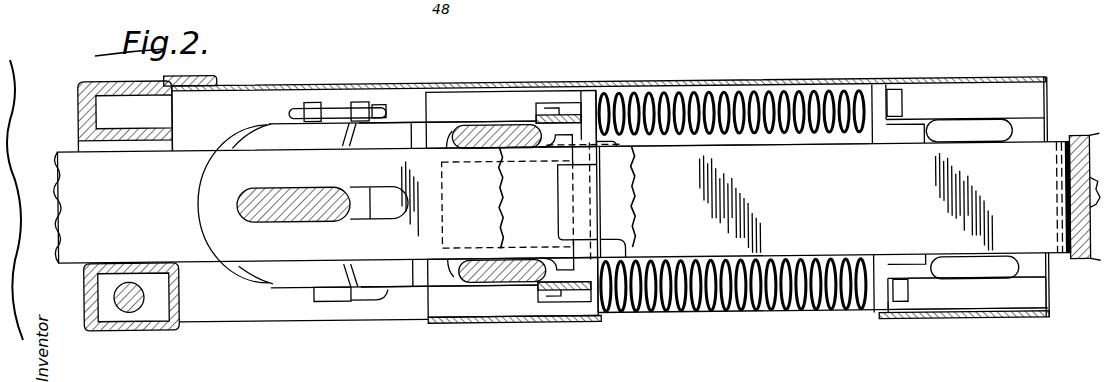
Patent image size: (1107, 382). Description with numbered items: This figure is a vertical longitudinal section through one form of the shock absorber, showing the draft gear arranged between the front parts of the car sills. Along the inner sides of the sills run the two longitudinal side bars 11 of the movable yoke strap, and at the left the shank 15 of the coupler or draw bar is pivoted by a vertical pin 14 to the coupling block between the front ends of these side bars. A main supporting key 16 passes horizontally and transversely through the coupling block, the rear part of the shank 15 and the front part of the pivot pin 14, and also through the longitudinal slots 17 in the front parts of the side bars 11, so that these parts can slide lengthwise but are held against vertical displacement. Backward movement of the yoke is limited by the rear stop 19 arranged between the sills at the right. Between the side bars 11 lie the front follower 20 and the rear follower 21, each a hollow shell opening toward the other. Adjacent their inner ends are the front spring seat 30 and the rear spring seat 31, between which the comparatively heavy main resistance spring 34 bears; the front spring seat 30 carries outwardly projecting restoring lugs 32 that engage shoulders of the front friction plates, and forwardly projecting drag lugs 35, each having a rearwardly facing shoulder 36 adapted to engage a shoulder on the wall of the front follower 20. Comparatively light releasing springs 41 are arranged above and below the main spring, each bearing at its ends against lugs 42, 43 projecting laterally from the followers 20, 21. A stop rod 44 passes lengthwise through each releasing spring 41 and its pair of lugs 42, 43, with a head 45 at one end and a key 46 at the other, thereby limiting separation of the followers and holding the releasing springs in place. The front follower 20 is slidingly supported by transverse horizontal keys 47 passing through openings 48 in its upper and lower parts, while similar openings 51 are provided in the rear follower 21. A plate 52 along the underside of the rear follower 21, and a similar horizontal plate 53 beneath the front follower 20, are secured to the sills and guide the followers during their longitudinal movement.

The side bars 11 is at (561, 203).
The vertical pin 14 is at (318, 295).
The shank 15 is at (74, 207).
The main supporting key 16 is at (285, 215).
The longitudinal slots 17 is at (350, 210).
The rear stop 19 is at (1066, 179).
The front follower 20 is at (432, 95).
The rear follower 21 is at (958, 300).
The front spring seat 30 is at (645, 142).
The rear spring seat 31 is at (836, 148).
The restoring lugs 32 is at (640, 250).
The main resistance spring 34 is at (722, 316).
The drag lugs 35 is at (578, 202).
The rearwardly facing shoulder 36 is at (558, 196).
The releasing springs 41 is at (712, 96).
The lugs 42 is at (593, 305).
The lugs 43 is at (872, 306).
The stop rods 44 is at (540, 108).
The head 45 is at (903, 100).
The key 46 is at (572, 110).
The transverse horizontal keys 47 is at (475, 128).
The horizontal transverse openings 48 is at (487, 124).
The horizontal transverse openings 51 is at (972, 199).
The plate 52 is at (1036, 323).
The horizontal plate 53 is at (440, 324).